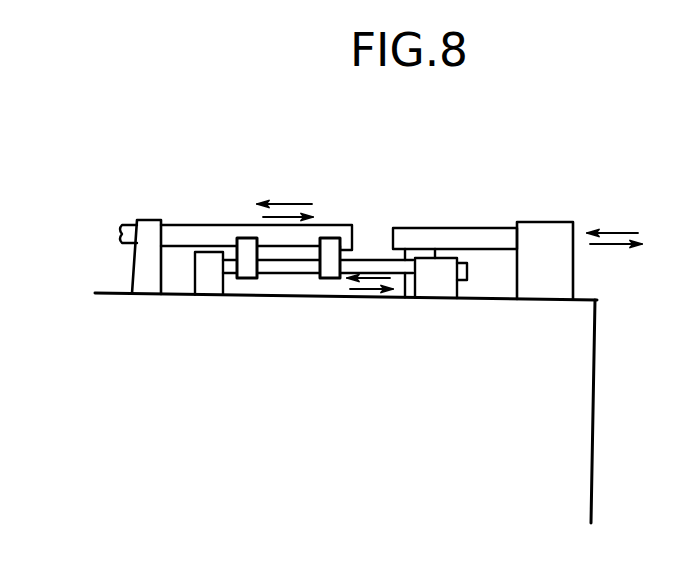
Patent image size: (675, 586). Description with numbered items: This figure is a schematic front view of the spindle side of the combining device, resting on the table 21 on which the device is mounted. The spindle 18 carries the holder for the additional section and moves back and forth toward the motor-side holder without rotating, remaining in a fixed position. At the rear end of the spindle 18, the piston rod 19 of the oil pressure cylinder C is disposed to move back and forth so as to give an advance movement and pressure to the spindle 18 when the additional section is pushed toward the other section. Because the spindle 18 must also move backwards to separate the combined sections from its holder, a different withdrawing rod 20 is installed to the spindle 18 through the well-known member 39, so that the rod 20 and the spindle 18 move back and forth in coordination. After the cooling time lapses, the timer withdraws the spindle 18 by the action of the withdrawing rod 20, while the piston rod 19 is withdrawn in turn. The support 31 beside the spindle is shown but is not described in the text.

The spindle 18 is at (172, 237).
The piston rod 19 is at (433, 242).
The oil pressure cylinder C is at (543, 240).
The pedestal 31 is at (143, 273).
The member 39 is at (245, 262).
The withdrawing rod 20 is at (293, 265).
The table 21 is at (563, 410).